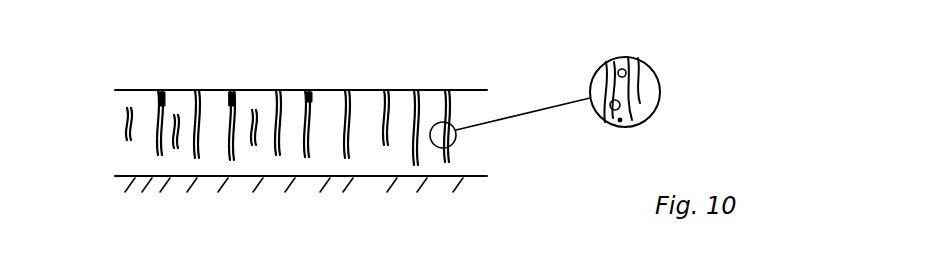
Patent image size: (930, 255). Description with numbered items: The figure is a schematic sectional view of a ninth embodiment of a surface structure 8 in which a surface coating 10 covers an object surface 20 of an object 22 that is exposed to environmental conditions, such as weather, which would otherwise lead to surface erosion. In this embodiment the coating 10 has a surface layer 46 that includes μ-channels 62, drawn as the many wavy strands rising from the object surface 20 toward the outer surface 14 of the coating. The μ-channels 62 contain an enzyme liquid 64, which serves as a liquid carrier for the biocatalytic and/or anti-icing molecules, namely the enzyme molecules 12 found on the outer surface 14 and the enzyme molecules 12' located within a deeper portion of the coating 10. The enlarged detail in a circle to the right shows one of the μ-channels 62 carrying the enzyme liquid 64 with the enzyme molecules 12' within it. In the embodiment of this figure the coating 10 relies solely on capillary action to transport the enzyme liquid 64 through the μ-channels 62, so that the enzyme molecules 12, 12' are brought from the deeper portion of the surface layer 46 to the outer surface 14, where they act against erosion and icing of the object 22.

The surface structure 8 is at (387, 74).
The surface coating 10 is at (420, 74).
The enzyme molecules 12 is at (289, 96).
The enzyme molecules 12' is at (634, 76).
The outer surface 14 is at (296, 89).
The object surface 20 is at (382, 175).
The object 22 is at (308, 188).
The surface layer 46 is at (116, 131).
The μ-channels 62 is at (230, 105).
The enzyme liquid 64 is at (620, 120).